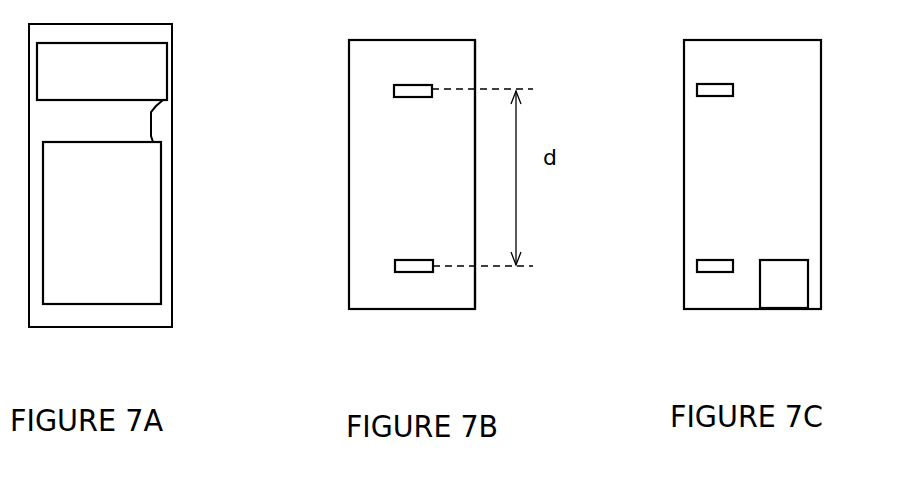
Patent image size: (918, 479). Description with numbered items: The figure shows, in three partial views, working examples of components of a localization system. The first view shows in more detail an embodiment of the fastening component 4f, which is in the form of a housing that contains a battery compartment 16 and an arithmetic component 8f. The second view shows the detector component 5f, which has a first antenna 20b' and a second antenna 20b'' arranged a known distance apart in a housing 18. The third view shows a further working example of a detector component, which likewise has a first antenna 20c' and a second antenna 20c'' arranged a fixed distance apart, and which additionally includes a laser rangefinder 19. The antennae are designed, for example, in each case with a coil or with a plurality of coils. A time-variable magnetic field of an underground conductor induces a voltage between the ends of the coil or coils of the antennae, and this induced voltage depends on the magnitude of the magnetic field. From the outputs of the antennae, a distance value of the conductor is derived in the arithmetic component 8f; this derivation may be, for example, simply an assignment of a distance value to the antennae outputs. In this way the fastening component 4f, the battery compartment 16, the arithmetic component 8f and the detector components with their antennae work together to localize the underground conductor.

In FIG. 7A, the fastening component 4f is at (172, 274).
In FIG. 7A, the battery compartment 16 is at (150, 72).
In FIG. 7A, the arithmetic component 8f is at (150, 201).
In FIG. 7B, the detector component 5f is at (346, 88).
In FIG. 7B, the housing 18 is at (473, 56).
In FIG. 7B, the first antenna 20b' is at (492, 75).
In FIG. 7B, the second antenna 20b'' is at (502, 289).
In FIG. 7C, the first antenna 20c' is at (669, 122).
In FIG. 7C, the second antenna 20c'' is at (655, 244).
In FIG. 7C, the laser rangefinder 19 is at (787, 262).